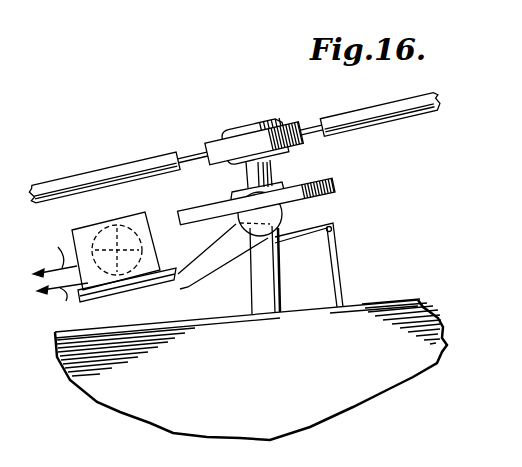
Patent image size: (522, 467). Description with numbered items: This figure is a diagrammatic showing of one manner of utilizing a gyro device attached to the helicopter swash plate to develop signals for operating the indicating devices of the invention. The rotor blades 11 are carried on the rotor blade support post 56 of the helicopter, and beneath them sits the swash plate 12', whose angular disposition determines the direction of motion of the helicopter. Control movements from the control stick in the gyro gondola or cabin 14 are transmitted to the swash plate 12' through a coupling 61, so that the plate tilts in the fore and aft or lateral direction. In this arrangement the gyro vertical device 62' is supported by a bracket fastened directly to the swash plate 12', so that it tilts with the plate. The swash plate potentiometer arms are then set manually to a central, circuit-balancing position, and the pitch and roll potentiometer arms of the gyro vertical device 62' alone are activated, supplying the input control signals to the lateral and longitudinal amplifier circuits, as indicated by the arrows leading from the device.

The rotor blades 11 is at (128, 166).
The swash plate 12' is at (276, 189).
The rotor blade support post 56 is at (278, 286).
The coupling 61 is at (337, 257).
The gyro vertical device 62' is at (134, 265).
The gyro gondola or cabin 14 is at (392, 300).